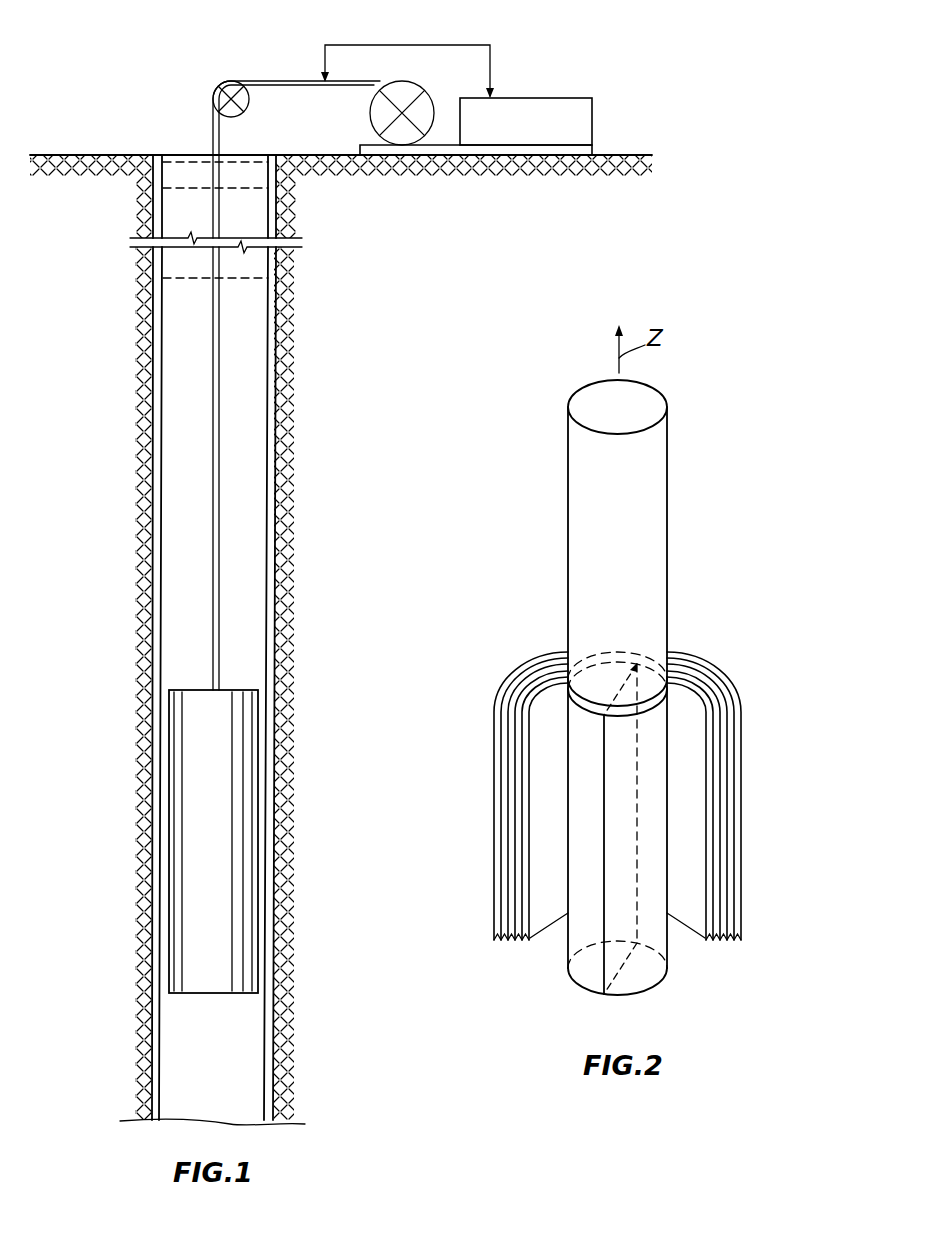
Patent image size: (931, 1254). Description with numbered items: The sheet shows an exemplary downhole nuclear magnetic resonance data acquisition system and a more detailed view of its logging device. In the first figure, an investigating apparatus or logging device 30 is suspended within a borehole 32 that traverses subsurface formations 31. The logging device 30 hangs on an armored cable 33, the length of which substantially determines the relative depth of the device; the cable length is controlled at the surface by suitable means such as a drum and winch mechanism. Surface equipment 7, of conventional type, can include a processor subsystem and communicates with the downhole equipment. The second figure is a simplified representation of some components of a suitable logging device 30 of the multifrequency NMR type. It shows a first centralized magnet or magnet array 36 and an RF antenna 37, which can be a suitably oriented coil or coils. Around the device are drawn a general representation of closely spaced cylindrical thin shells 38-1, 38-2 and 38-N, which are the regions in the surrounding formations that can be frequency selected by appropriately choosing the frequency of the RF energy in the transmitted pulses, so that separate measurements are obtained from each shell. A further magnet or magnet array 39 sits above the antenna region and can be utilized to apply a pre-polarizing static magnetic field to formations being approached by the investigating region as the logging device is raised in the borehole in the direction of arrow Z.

In FIG. 1, the surface equipment 7 is at (572, 108).
In FIG. 1, the logging device 30 is at (185, 684).
In FIG. 1, the subsurface formations 31 is at (86, 155).
In FIG. 1, the borehole 32 is at (181, 162).
In FIG. 1, the armored cable 33 is at (212, 153).
In FIG. 2, the first centralized magnet or magnet array 36 is at (613, 776).
In FIG. 2, the RF antenna 37 is at (605, 836).
In FIG. 2, the cylindrical thin shell 38-1 is at (705, 747).
In FIG. 2, the cylindrical thin shell 38-2 is at (712, 765).
In FIG. 2, the cylindrical thin shell 38-N is at (740, 790).
In FIG. 2, the further magnet or magnet array 39 is at (655, 520).